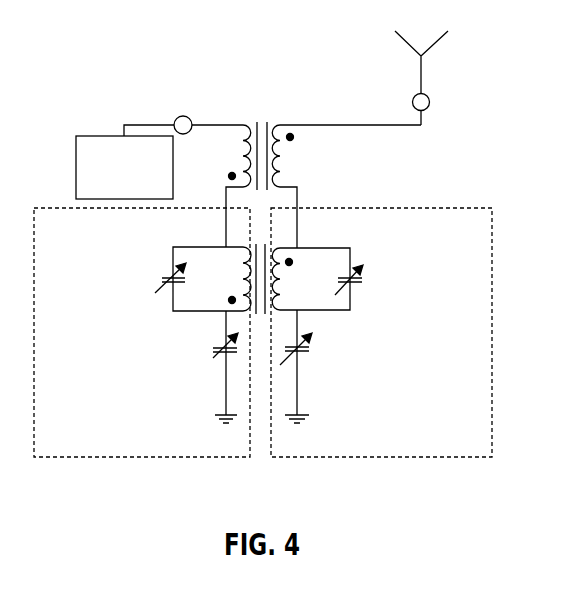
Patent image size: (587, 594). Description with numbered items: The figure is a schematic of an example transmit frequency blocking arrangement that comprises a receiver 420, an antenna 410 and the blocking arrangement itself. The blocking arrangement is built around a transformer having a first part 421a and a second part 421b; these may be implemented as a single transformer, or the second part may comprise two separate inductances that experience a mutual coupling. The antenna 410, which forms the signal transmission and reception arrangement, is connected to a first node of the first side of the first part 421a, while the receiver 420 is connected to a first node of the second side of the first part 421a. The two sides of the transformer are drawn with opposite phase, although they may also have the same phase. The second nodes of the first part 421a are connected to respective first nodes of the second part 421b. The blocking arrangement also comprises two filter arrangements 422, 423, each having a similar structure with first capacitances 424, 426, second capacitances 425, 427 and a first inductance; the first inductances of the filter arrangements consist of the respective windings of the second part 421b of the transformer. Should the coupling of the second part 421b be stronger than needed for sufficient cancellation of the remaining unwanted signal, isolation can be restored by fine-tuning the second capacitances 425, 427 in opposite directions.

The antenna 410 is at (440, 40).
The receiver 420 is at (140, 193).
The first part of the transformer 421a is at (283, 155).
The second part of the transformer 421b is at (240, 278).
The filter arrangement 422 is at (381, 332).
The filter arrangement 423 is at (142, 332).
The first capacitance 424 is at (158, 299).
The second capacitance 425 is at (215, 362).
The first capacitance 426 is at (353, 288).
The second capacitance 427 is at (298, 353).